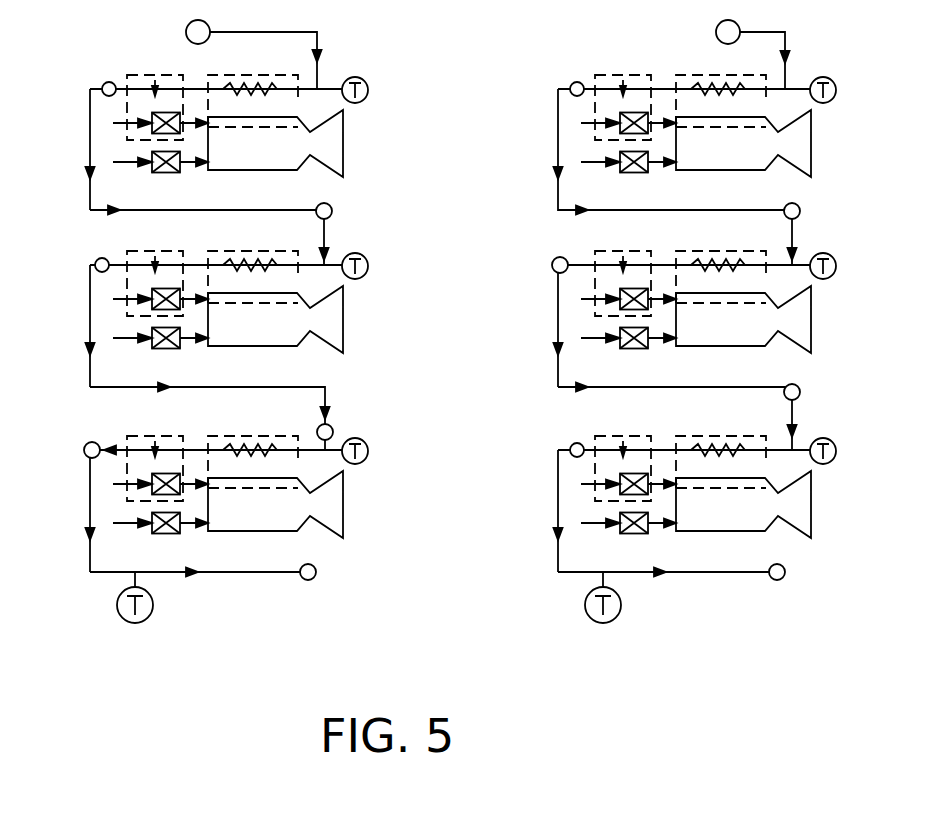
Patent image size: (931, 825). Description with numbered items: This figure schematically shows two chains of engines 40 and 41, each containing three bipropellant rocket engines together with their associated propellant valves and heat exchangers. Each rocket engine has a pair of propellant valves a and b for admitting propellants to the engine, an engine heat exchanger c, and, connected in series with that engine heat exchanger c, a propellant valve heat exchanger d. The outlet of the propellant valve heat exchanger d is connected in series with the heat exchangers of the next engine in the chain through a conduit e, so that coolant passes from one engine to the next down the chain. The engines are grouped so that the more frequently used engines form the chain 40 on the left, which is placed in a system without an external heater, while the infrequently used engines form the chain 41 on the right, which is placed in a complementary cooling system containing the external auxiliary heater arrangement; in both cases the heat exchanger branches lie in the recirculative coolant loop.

The chain of engines 40 is at (224, 321).
The chain of engines 41 is at (533, 112).
The propellant valve a is at (150, 118).
The propellant valve b is at (152, 158).
The engine heat exchanger c is at (208, 79).
The propellant valve heat exchanger d is at (127, 80).
The conduit e is at (90, 191).